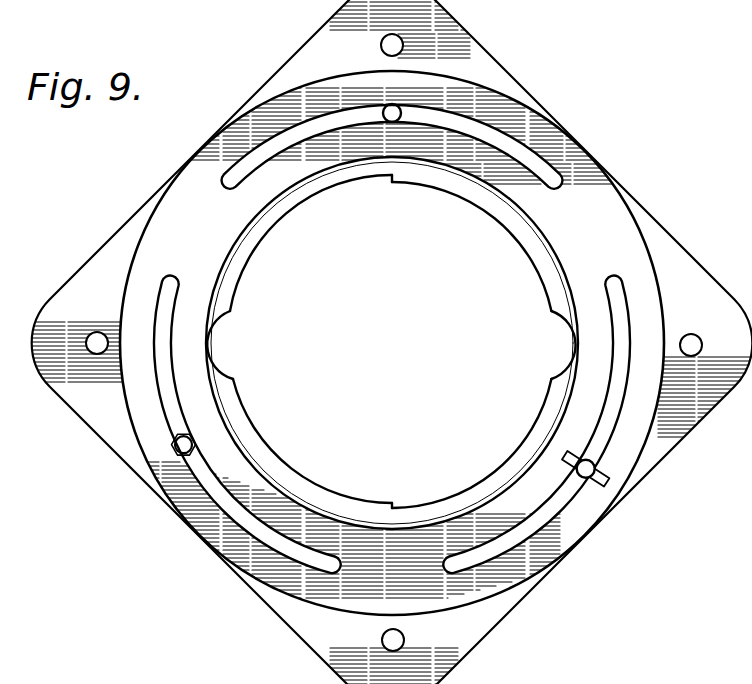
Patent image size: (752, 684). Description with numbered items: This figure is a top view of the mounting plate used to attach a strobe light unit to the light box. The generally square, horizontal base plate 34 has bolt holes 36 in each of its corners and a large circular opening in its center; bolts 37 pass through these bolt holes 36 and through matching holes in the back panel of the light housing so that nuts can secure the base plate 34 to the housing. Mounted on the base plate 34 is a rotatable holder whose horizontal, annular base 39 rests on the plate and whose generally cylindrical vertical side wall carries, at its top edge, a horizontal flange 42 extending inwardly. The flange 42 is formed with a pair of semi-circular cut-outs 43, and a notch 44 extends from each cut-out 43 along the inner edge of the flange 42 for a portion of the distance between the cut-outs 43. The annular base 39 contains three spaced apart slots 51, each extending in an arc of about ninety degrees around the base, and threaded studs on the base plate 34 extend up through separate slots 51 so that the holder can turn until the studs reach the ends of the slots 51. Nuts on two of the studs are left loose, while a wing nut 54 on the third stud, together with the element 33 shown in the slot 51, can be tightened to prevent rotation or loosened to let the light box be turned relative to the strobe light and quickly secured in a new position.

The pin 33 is at (391, 110).
The base plate 34 is at (493, 77).
The bolt holes 36 is at (396, 42).
The bolts 37 is at (648, 247).
The annular base 39 is at (470, 590).
The flange 42 is at (313, 492).
The semi-circular cut-outs 43 is at (231, 344).
The notch 44 is at (338, 187).
The slots 51 is at (361, 114).
The wing nut 54 is at (579, 455).